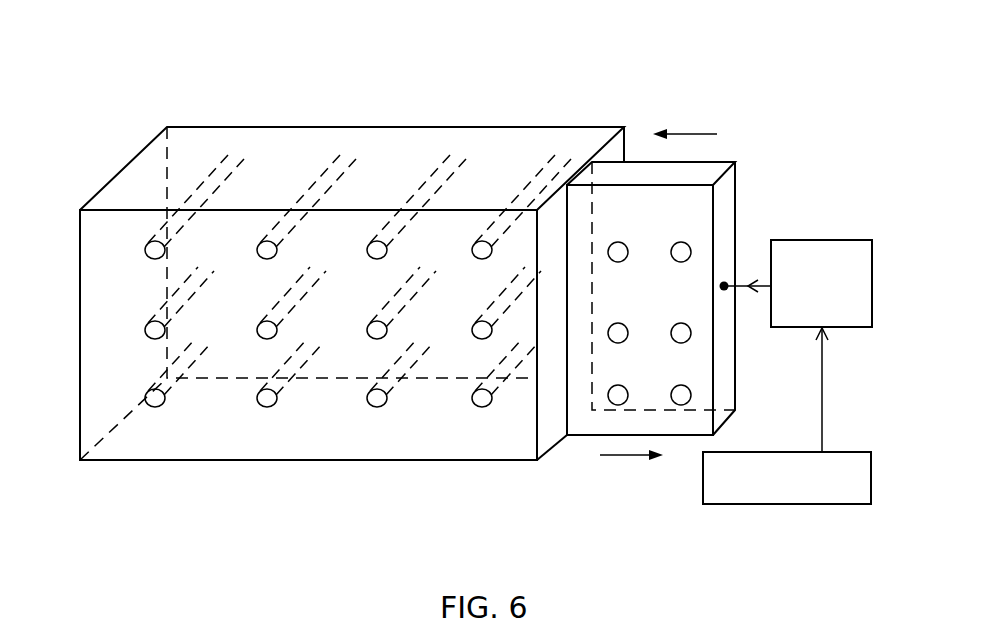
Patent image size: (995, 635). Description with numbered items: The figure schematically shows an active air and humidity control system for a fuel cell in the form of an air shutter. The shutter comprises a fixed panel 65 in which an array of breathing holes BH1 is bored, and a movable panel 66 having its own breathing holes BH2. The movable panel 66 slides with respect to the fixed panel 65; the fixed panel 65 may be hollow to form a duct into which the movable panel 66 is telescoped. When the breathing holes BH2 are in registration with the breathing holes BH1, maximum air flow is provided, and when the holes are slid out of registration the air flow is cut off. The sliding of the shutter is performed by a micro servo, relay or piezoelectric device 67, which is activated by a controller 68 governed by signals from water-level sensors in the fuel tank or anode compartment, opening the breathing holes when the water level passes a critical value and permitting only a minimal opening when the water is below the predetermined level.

The fixed panel 65 is at (342, 283).
The movable panel 66 is at (687, 290).
The micro servo, relay or piezoelectric device 67 is at (818, 240).
The controller 68 is at (760, 504).
The breathing holes BH1 is at (162, 254).
The breathing holes BH2 is at (676, 258).